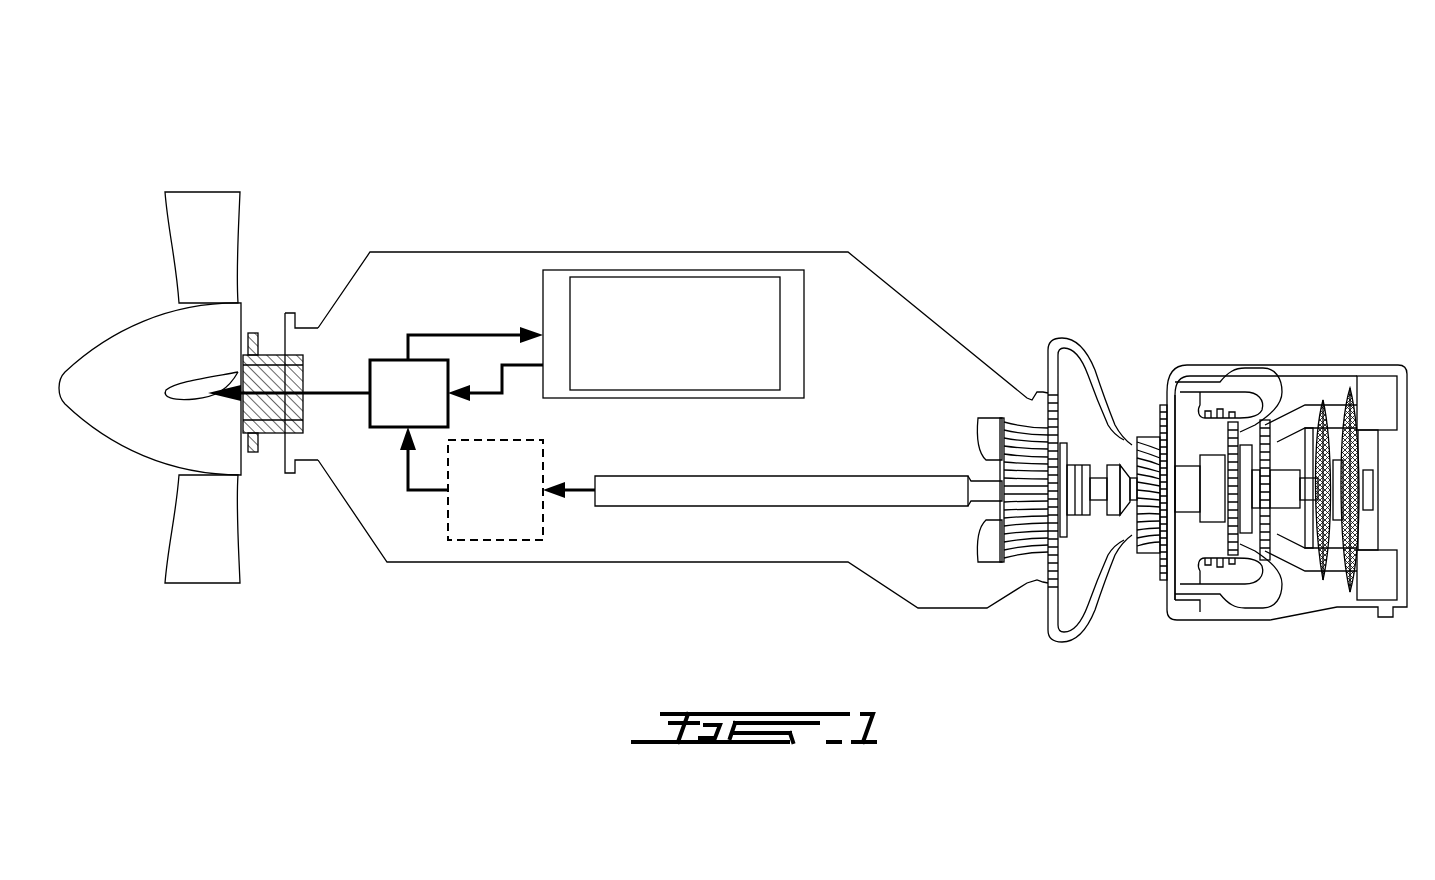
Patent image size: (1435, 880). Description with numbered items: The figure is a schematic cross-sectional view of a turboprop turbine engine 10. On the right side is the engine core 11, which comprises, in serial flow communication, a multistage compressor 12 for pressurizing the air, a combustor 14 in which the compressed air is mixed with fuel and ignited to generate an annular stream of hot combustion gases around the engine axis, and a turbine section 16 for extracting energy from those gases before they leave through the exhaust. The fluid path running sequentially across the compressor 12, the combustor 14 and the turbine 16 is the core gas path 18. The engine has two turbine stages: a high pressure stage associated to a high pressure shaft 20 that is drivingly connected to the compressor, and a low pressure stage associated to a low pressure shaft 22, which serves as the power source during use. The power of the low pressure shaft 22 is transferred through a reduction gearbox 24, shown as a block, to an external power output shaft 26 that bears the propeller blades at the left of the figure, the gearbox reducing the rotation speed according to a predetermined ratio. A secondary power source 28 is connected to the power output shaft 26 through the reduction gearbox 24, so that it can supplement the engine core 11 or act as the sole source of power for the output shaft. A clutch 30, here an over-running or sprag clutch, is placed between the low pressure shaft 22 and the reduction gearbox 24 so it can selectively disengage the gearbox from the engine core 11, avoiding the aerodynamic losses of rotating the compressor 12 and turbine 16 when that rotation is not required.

The turbine engine 10 is at (1072, 141).
The engine core 11 is at (1363, 352).
The multistage compressor 12 is at (1123, 434).
The combustor 14 is at (1265, 359).
The turbine section 16 is at (1344, 396).
The core gas path 18 is at (1181, 350).
The high pressure shaft 20 is at (1215, 440).
The low pressure shaft 22 is at (1132, 470).
The reduction gearbox 24 is at (387, 343).
The power output shaft 26 is at (260, 353).
The secondary power source 28 is at (680, 270).
The clutch 30 is at (493, 540).